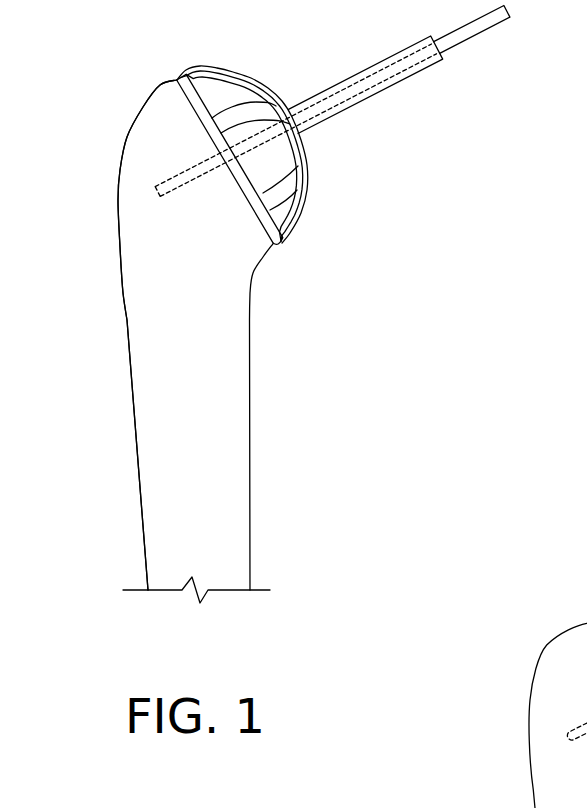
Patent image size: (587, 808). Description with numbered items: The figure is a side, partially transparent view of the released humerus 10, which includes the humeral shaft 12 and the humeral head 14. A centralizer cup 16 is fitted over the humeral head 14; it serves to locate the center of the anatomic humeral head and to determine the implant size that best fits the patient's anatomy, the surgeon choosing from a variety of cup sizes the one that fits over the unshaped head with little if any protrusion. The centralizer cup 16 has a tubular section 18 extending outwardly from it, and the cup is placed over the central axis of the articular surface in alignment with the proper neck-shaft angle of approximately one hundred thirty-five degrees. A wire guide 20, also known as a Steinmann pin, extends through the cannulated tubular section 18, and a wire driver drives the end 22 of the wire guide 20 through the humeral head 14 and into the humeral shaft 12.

The humerus 10 is at (235, 372).
The humeral shaft 12 is at (157, 418).
The humeral head 14 is at (280, 209).
The centralizer cup 16 is at (248, 79).
The tubular section 18 is at (362, 103).
The wire guide 20 is at (468, 39).
The end of the wire guide 22 is at (158, 196).